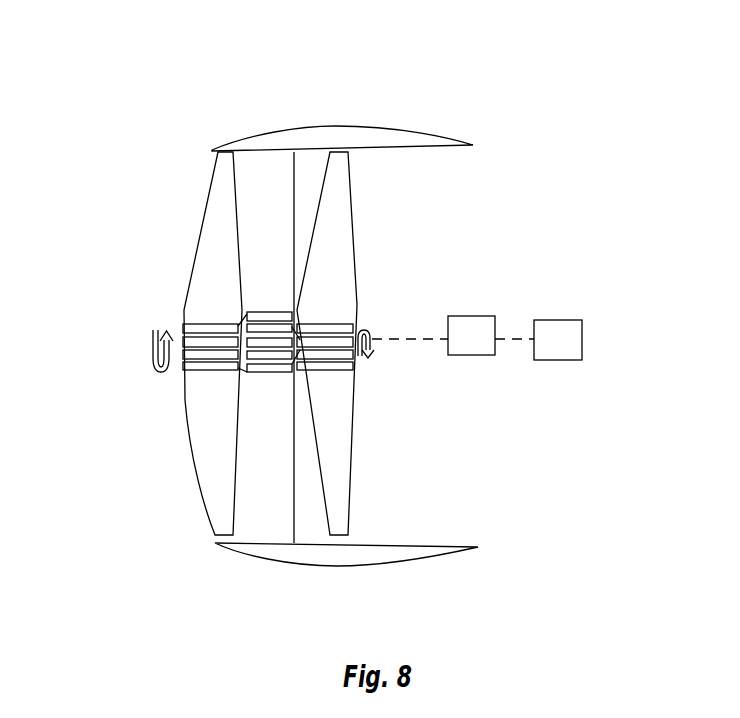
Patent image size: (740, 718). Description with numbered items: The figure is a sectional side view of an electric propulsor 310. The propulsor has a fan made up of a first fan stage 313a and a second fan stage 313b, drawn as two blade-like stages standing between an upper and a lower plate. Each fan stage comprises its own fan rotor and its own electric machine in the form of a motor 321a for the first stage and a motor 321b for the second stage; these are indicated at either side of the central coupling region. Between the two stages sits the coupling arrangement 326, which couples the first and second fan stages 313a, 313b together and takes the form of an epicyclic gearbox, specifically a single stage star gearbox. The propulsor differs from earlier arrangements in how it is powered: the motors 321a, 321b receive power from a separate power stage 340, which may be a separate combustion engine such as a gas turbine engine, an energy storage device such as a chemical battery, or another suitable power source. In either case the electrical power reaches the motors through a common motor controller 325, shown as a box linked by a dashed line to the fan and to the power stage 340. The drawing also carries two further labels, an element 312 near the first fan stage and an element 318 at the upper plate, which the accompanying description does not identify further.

The electric propulsor 310 is at (546, 118).
The rotor assembly 312 is at (162, 265).
The first fan stage 313a is at (204, 212).
The second fan stage 313b is at (355, 240).
The end plate 318 is at (325, 125).
The motor 321a is at (167, 327).
The motor 321b is at (367, 328).
The motor controller 325 is at (468, 355).
The coupling arrangement 326 is at (268, 377).
The power stage 340 is at (580, 360).